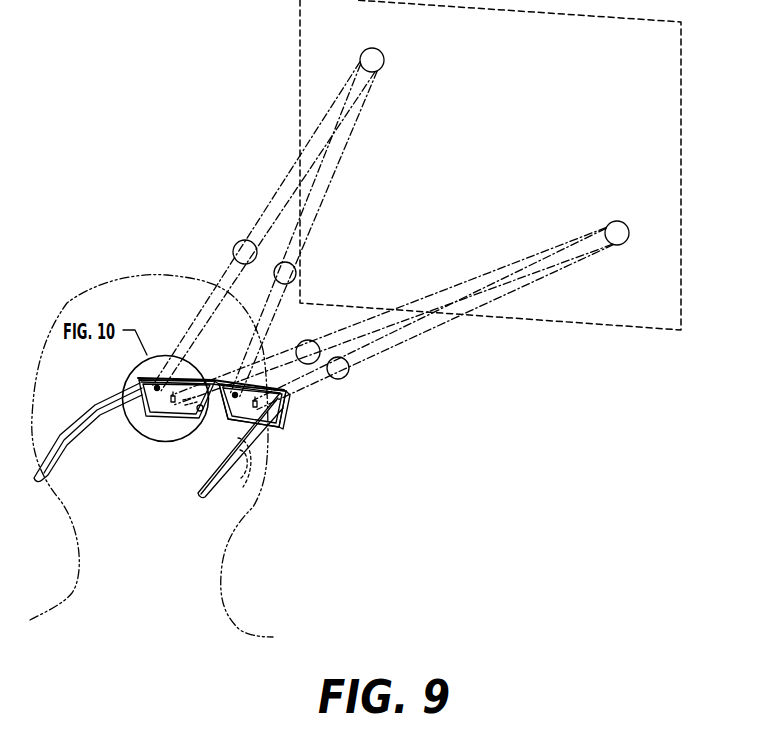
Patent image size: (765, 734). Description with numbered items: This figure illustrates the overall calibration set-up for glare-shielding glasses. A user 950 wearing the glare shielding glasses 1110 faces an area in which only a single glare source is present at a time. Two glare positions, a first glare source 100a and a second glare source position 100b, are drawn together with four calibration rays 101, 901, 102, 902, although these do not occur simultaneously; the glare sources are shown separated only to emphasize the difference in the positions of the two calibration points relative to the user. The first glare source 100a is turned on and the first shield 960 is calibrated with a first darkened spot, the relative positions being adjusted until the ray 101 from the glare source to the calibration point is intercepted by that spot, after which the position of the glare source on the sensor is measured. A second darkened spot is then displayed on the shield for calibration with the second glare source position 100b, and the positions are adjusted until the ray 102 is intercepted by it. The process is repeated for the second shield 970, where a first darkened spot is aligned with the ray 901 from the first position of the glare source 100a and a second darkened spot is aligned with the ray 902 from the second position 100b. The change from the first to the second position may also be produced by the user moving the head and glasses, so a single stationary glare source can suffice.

The first glare source 100a is at (378, 62).
The second glare source position 100b is at (616, 228).
The ray 101 is at (238, 245).
The ray 901 is at (296, 270).
The ray 102 is at (313, 341).
The ray 902 is at (345, 358).
The first shield 960 is at (157, 402).
The second shield 970 is at (238, 408).
The glare shielding glasses 1110 is at (277, 425).
The user 950 is at (268, 477).